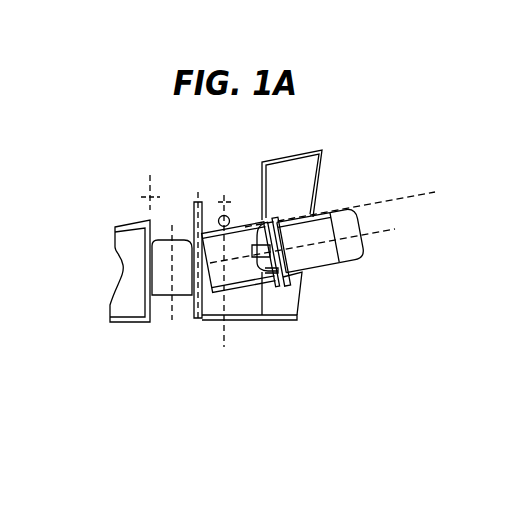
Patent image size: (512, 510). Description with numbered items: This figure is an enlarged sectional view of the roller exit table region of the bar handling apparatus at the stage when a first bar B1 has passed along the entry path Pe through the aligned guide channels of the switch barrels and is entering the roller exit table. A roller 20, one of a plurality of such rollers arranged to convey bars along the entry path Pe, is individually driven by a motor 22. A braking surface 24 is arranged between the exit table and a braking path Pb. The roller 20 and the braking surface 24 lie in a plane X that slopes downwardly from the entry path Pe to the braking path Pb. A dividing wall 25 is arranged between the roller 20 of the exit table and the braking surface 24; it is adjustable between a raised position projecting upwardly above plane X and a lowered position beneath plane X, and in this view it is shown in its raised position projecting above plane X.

The roller 20 is at (243, 288).
The motor 22 is at (349, 252).
The braking surface 24 is at (172, 238).
The dividing wall 25 is at (193, 203).
The first bar B1 is at (229, 219).
The braking path Pb is at (150, 190).
The entry path Pe is at (218, 203).
The plane X is at (410, 195).